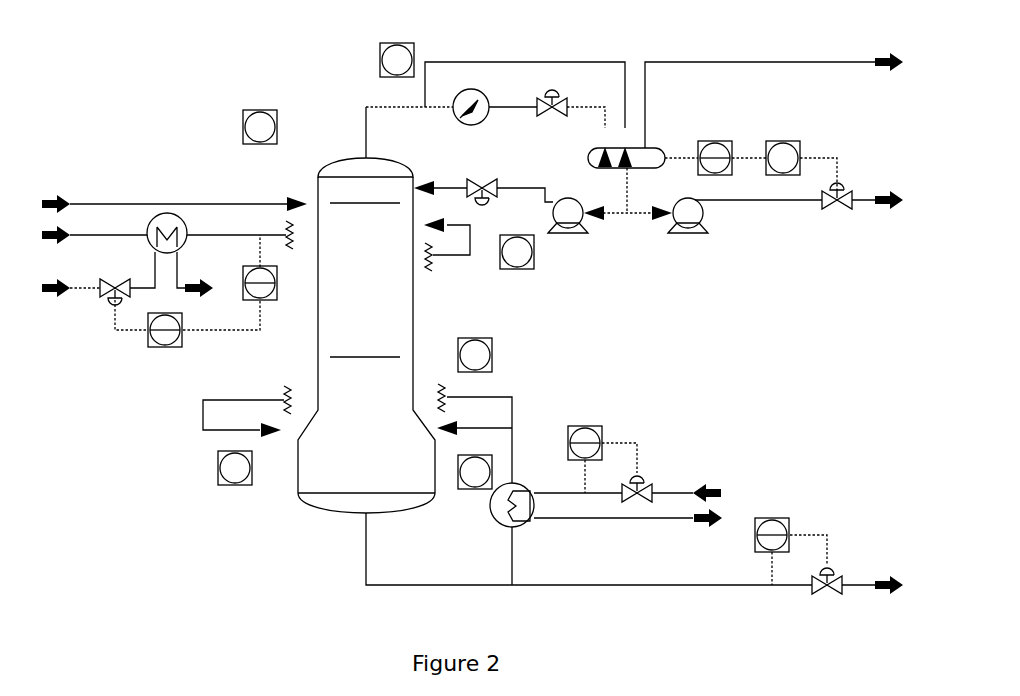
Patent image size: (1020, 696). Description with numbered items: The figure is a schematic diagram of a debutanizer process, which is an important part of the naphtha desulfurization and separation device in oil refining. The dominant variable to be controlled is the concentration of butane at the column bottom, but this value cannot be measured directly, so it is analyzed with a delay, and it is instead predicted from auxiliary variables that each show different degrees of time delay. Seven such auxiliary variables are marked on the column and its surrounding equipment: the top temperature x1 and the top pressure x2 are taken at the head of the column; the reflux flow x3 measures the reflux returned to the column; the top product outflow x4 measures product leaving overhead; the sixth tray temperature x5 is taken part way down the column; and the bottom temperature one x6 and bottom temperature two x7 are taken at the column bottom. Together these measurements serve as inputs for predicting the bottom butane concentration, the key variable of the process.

The top temperature x1 is at (366, 127).
The top pressure x2 is at (553, 90).
The reflux flow x3 is at (483, 205).
The top product outflow x4 is at (783, 158).
The 6th tray temperature x5 is at (585, 425).
The bottom temperature 1 x6 is at (235, 430).
The bottom temperature 2 x7 is at (475, 428).